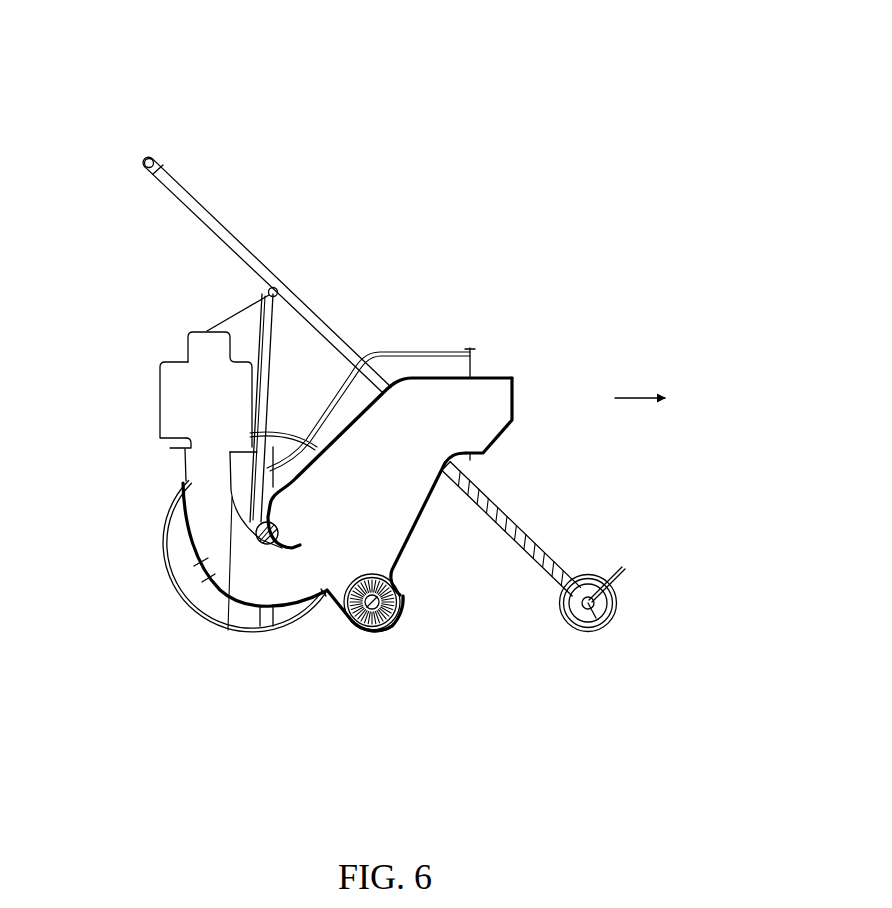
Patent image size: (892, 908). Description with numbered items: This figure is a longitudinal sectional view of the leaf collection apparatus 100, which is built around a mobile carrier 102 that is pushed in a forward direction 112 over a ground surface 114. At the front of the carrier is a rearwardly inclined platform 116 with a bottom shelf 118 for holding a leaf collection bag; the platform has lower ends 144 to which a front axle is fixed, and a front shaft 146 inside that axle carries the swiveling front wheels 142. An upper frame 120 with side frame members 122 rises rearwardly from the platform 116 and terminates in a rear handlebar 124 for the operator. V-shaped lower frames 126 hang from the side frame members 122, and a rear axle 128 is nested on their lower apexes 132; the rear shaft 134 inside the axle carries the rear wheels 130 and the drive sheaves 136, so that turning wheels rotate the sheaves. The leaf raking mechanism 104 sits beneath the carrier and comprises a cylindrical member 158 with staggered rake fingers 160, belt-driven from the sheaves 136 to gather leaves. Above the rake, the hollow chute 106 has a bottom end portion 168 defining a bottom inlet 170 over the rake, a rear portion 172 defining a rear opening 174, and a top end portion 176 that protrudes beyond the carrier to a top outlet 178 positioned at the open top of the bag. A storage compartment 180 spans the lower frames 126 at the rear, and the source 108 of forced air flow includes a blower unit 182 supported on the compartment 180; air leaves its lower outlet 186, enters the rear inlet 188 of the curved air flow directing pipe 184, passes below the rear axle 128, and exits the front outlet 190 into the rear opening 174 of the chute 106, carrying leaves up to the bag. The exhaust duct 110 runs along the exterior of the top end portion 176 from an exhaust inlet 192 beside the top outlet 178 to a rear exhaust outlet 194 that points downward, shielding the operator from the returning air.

The apparatus 100 is at (466, 88).
The mobile carrier 102 is at (304, 254).
The leaf raking mechanism 104 is at (399, 638).
The hollow chute 106 is at (438, 513).
The source of forced air flow 108 is at (144, 398).
The exhaust duct 110 is at (430, 428).
The forward direction 112 is at (622, 399).
The surface 114 is at (574, 603).
The rearwardly inclined platform 116 is at (515, 511).
The bottom shelf 118 is at (616, 572).
The upper frame 120 is at (258, 250).
The side frame members 122 is at (188, 212).
The rear handlebar 124 is at (149, 158).
The lower frames 126 is at (273, 382).
The rear axle 128 is at (291, 525).
The rear wheels 130 is at (179, 574).
The lower apexes 132 is at (198, 596).
The rear shaft 134 is at (266, 542).
The sheaves 136 is at (294, 487).
The front wheels 142 is at (586, 603).
The lower ends 144 is at (580, 601).
The front shaft 146 is at (609, 614).
The cylindrical member 158 is at (412, 590).
The rake fingers 160 is at (399, 598).
The bottom end portion 168 is at (381, 561).
The bottom inlet 170 is at (340, 600).
The rear portion 172 is at (338, 612).
The rear opening 174 is at (285, 545).
The top end portion 176 is at (491, 375).
The top outlet 178 is at (514, 404).
The storage compartment 180 is at (240, 311).
The blower unit 182 is at (196, 333).
The air flow directing pipe 184 is at (196, 546).
The lower outlet 186 is at (189, 440).
The rear inlet 188 is at (192, 453).
The front outlet 190 is at (325, 597).
The exhaust inlet 192 is at (476, 358).
The rear exhaust outlet 194 is at (268, 482).